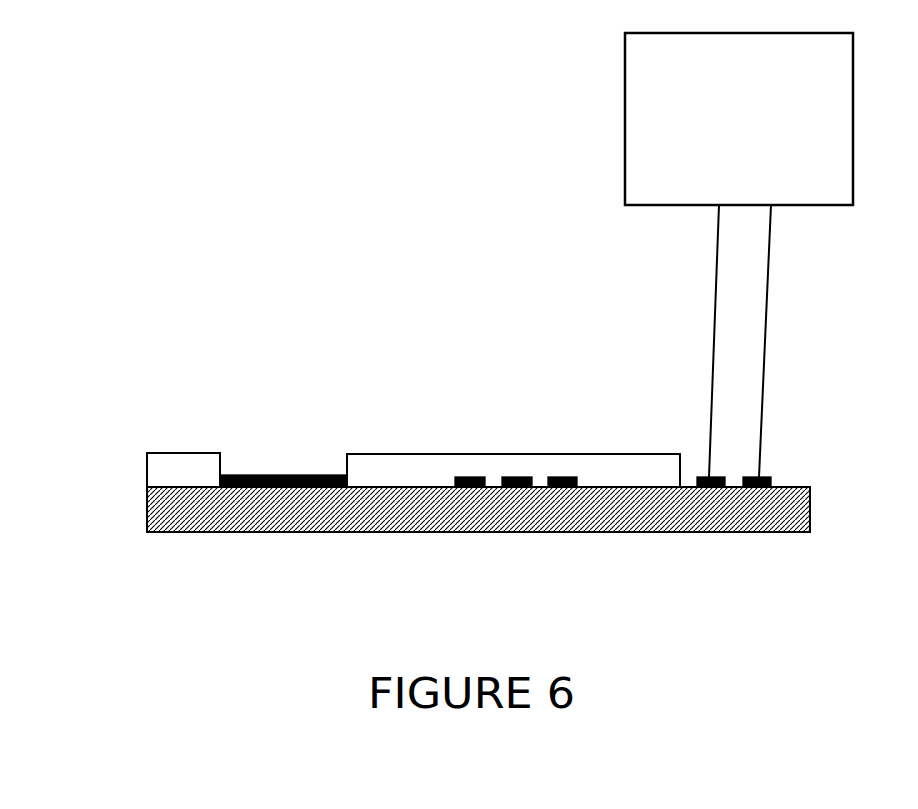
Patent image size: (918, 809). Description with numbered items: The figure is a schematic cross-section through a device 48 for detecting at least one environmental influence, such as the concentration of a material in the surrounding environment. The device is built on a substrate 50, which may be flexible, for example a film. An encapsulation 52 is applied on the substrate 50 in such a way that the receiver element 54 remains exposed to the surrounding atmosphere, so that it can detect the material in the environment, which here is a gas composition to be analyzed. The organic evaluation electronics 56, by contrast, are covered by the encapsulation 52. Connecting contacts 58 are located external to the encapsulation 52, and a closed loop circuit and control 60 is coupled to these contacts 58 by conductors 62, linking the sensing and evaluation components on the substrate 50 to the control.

The device 48 is at (218, 580).
The substrate 50 is at (542, 533).
The encapsulation 52 is at (175, 463).
The receiver element 54 is at (278, 477).
The organic evaluation electronics 56 is at (520, 480).
The connecting contacts 58 is at (760, 477).
The closed loop circuit and control 60 is at (722, 98).
The conductors 62 is at (719, 297).